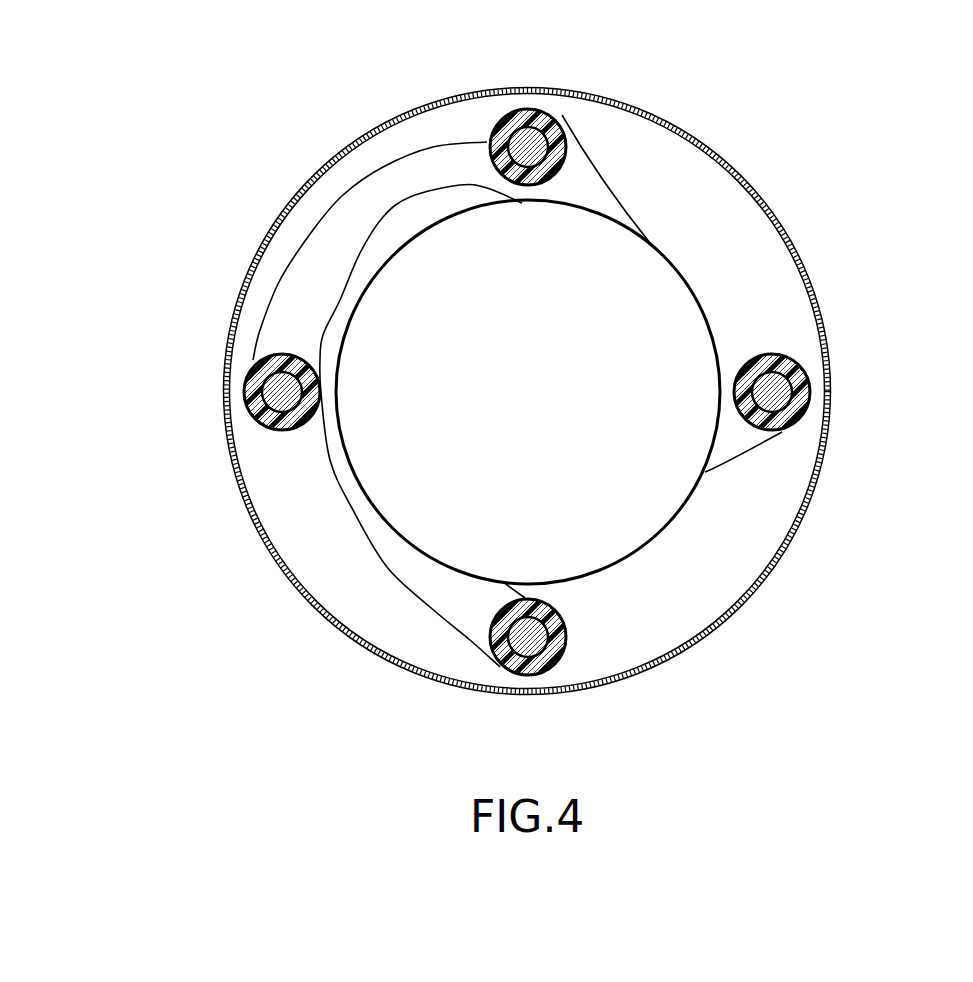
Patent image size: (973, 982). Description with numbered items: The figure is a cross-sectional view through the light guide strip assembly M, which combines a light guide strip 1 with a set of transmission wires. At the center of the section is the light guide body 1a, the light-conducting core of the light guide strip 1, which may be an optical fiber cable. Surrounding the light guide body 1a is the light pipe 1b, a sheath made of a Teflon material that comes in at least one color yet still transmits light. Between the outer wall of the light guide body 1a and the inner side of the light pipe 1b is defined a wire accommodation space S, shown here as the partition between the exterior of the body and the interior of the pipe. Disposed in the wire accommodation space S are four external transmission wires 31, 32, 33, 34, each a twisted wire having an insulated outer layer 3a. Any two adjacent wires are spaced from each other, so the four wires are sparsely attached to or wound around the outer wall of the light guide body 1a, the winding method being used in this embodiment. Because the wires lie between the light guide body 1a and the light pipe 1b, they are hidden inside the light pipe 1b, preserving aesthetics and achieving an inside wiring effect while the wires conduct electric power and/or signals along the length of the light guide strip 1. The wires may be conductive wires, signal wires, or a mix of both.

The light guide strip 1 is at (837, 139).
The light guide body 1a is at (660, 317).
The light pipe 1b is at (808, 289).
The insulated outer layer 3a is at (792, 367).
The external transmission wire 31 is at (802, 422).
The external transmission wire 32 is at (563, 110).
The external transmission wire 33 is at (255, 362).
The external transmission wire 34 is at (490, 672).
The wire accommodation space S is at (700, 573).
The light guide strip assembly M is at (152, 121).